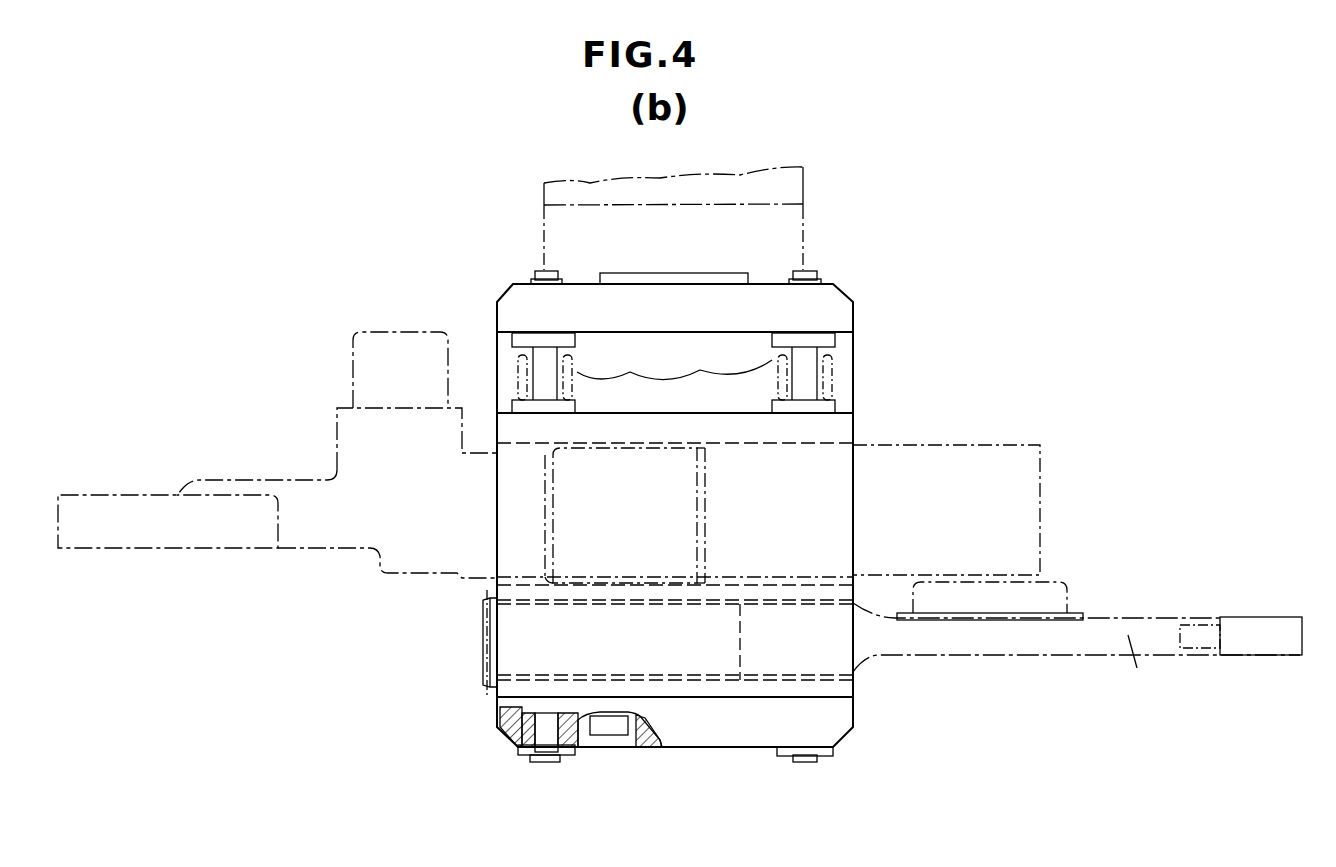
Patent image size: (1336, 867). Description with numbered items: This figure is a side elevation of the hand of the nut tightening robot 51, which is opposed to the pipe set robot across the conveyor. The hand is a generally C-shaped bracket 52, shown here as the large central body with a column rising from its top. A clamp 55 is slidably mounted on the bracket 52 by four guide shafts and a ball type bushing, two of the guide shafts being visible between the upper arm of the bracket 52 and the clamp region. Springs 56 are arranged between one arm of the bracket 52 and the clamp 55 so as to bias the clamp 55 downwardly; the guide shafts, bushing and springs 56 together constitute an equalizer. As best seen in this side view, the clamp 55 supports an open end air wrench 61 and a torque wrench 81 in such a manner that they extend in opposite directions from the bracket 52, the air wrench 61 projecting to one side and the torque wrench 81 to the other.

The nut tightening robot 51 is at (806, 183).
The bracket 52 is at (507, 289).
The clamp 55 is at (490, 592).
The springs 56 is at (674, 378).
The open end air wrench 61 is at (953, 445).
The torque wrench 81 is at (1068, 584).